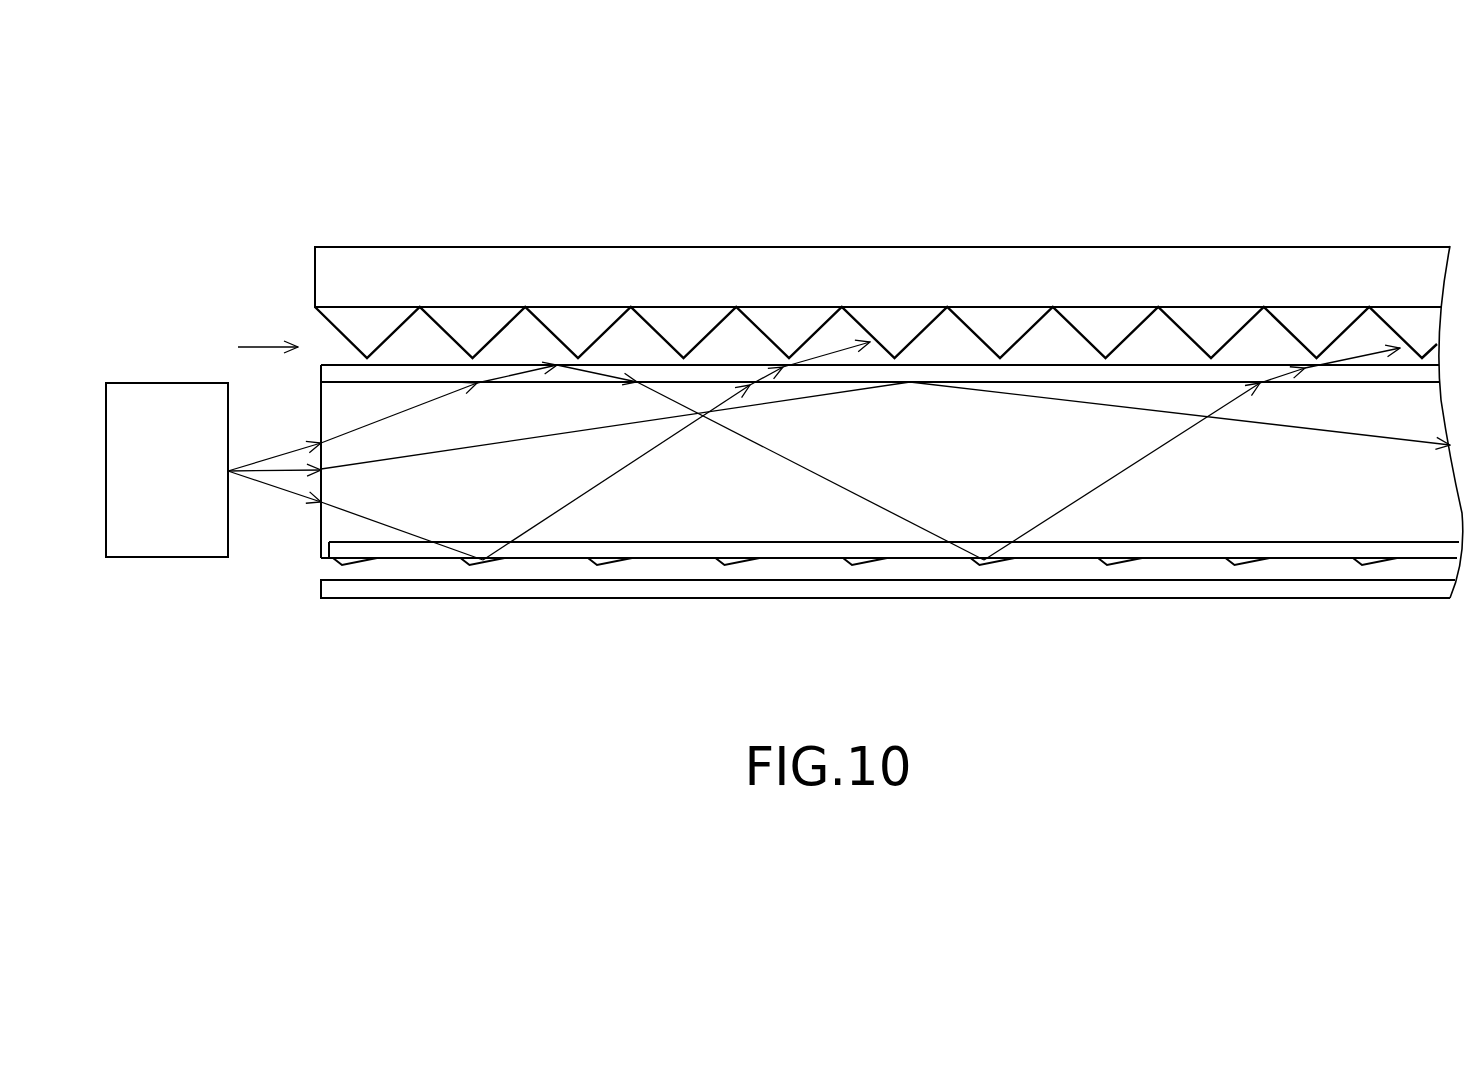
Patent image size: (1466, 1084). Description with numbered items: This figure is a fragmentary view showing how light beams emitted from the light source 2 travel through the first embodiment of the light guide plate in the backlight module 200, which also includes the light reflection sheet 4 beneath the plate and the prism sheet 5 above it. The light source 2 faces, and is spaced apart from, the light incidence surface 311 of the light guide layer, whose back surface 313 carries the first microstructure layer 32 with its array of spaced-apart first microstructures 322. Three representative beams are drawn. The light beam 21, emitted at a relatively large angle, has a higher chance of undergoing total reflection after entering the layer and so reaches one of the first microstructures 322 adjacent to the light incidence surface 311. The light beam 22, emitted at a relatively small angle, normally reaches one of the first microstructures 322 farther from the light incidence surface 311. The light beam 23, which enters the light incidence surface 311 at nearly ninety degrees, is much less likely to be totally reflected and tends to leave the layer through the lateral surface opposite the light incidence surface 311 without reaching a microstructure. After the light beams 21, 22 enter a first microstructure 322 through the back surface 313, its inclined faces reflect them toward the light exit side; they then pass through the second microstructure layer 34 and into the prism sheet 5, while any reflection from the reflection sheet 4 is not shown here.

The backlight module 200 is at (184, 117).
The light source 2 is at (152, 383).
The light beam 21 is at (268, 487).
The light beam 22 is at (267, 457).
The light beam 23 is at (288, 470).
The light incidence surface 311 is at (320, 525).
The back surface 313 is at (327, 558).
The first microstructure layer 32 is at (362, 567).
The first microstructures 322 is at (482, 564).
The second microstructure layer 34 is at (413, 352).
The light reflection sheet 4 is at (428, 592).
The prism sheet 5 is at (882, 250).